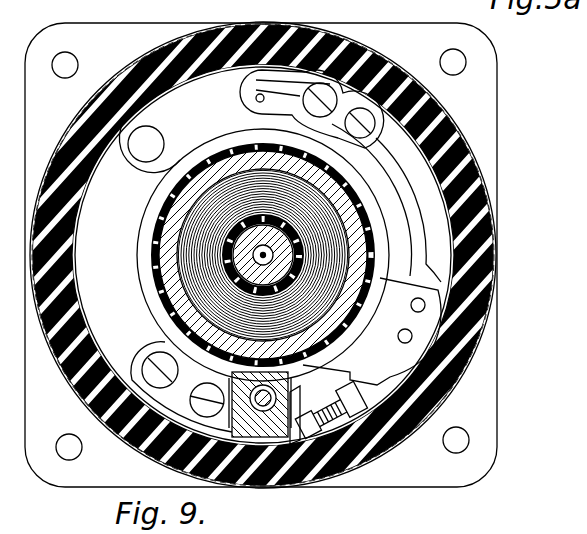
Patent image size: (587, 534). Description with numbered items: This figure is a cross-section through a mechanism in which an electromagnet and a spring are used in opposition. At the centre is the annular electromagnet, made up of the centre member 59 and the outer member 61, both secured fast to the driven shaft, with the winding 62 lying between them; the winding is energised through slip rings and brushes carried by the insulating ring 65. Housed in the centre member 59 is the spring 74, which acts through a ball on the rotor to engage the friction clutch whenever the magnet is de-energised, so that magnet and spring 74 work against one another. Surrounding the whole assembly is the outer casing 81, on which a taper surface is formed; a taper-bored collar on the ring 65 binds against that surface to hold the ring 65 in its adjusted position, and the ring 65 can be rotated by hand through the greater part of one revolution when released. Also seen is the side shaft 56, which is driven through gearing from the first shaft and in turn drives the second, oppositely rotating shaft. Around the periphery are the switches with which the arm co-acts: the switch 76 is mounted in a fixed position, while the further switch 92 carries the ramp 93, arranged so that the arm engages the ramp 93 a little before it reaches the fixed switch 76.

The side shaft 56 is at (264, 404).
The centre member 59 is at (224, 270).
The outer member 61 is at (160, 257).
The winding 62 is at (192, 222).
The insulating ring 65 is at (258, 31).
The spring 74 is at (238, 285).
The switch 76 is at (358, 443).
The outer casing 81 is at (341, 39).
The further switch 92 is at (420, 215).
The ramp 93 is at (380, 352).